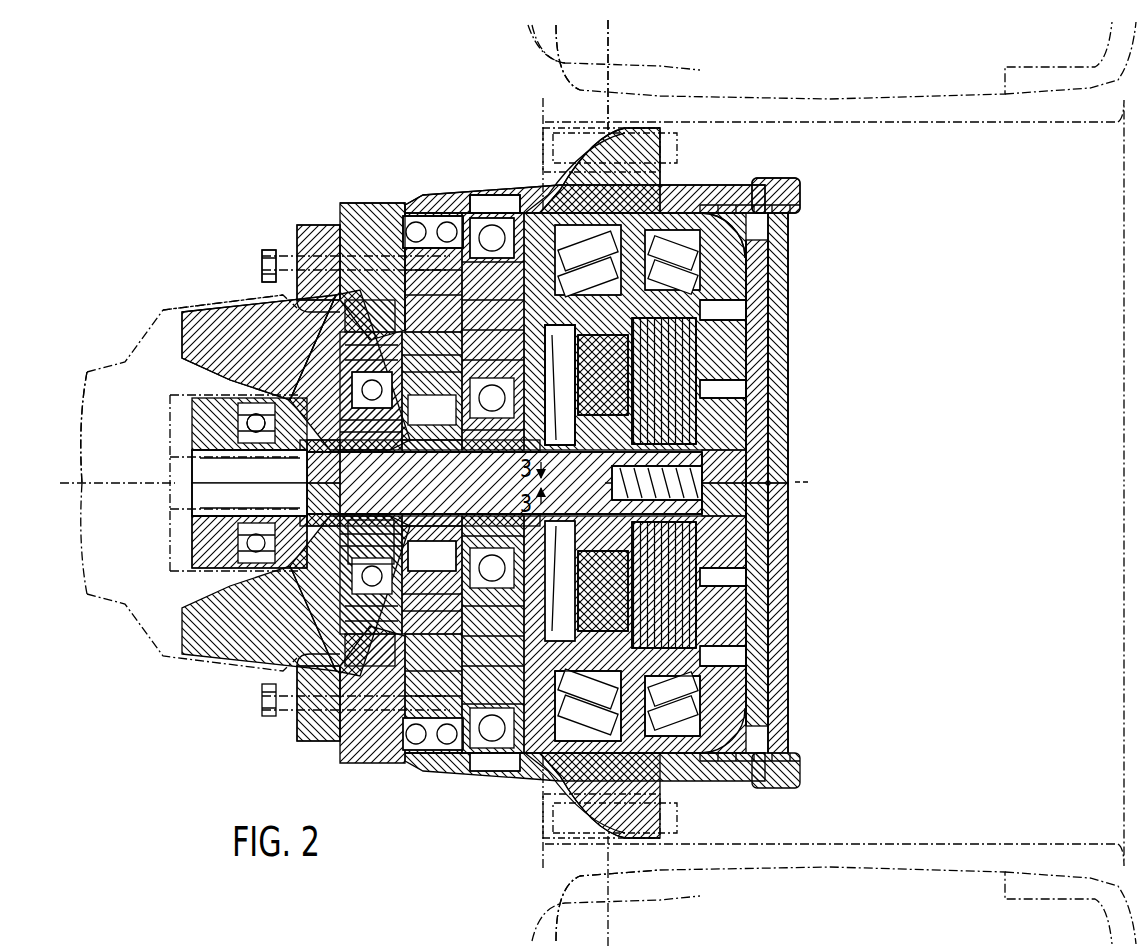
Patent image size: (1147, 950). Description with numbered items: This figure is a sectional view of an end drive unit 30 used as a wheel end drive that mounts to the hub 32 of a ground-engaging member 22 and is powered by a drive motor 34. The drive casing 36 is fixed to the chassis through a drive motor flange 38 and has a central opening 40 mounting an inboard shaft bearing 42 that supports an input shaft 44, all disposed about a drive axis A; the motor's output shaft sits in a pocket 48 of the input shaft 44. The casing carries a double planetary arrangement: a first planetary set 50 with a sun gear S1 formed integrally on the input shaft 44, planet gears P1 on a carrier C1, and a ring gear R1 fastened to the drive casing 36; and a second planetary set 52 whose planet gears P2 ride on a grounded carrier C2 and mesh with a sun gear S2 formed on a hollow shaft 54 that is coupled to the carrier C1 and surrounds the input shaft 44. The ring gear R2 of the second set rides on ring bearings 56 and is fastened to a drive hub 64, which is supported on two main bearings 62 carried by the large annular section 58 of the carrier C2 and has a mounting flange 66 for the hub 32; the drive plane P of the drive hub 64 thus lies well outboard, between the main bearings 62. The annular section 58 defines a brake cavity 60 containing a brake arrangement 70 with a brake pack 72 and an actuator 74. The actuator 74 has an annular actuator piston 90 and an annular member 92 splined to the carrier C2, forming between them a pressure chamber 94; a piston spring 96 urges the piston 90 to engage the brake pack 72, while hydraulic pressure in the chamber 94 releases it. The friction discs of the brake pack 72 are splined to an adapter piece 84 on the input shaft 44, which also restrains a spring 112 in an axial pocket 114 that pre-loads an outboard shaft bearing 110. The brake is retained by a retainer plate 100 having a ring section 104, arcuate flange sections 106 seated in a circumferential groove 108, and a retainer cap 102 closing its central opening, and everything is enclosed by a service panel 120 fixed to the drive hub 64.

The ground-engaging member 22 is at (532, 55).
The hub 32 is at (548, 85).
The drive plane P is at (609, 45).
The second planetary set 52 is at (513, 180).
The ring gear R2 is at (474, 200).
The planet gears P2 is at (492, 212).
The ring bearings 56 is at (448, 212).
The first planetary set 50 is at (400, 200).
The ring gear R1 is at (362, 205).
The drive casing 36 is at (318, 228).
The drive motor flange 38 is at (272, 255).
The end drive unit 30 is at (216, 276).
The drive motor 34 is at (80, 380).
The central opening 40 is at (256, 410).
The inboard shaft bearing 42 is at (246, 428).
The pocket 48 is at (205, 515).
The input shaft 44 is at (262, 590).
The carrier C1 is at (345, 660).
The planet gears P1 is at (370, 365).
The sun gear S1 is at (373, 528).
The hollow shaft 54 is at (430, 530).
The sun gear S2 is at (435, 548).
The carrier C2 is at (550, 425).
The brake cavity 60 is at (540, 755).
The main bearings 62 is at (650, 745).
The drive hub 64 is at (690, 745).
The mounting flange 66 is at (640, 835).
The piston spring 96 is at (775, 213).
The flange sections 106 is at (757, 240).
The annular section 58 is at (730, 262).
The actuator piston 90 is at (610, 340).
The brake arrangement 70 is at (712, 315).
The brake pack 72 is at (672, 348).
The annular member 92 is at (655, 365).
The service panel 120 is at (780, 376).
The pressure chamber 94 is at (722, 398).
The adapter piece 84 is at (700, 420).
The spring 112 is at (690, 472).
The drive axis A is at (797, 482).
The axial pocket 114 is at (705, 502).
The retainer cap 102 is at (740, 522).
The outboard shaft bearing 110 is at (720, 560).
The retainer plate 100 is at (690, 592).
The circumferential groove 108 is at (742, 615).
The ring section 104 is at (700, 630).
The actuator 74 is at (612, 620).